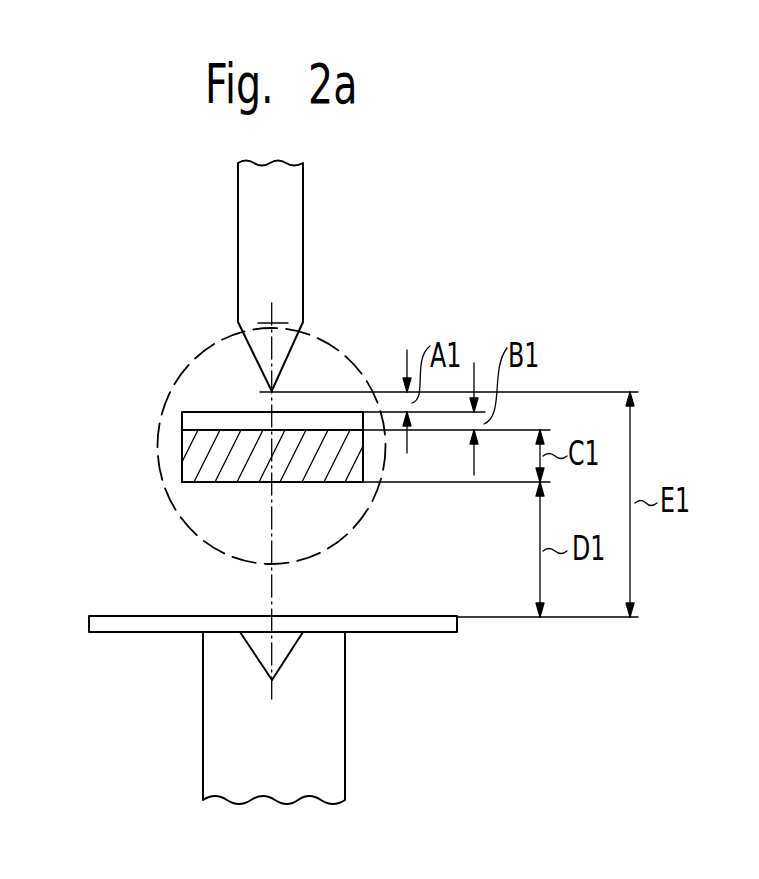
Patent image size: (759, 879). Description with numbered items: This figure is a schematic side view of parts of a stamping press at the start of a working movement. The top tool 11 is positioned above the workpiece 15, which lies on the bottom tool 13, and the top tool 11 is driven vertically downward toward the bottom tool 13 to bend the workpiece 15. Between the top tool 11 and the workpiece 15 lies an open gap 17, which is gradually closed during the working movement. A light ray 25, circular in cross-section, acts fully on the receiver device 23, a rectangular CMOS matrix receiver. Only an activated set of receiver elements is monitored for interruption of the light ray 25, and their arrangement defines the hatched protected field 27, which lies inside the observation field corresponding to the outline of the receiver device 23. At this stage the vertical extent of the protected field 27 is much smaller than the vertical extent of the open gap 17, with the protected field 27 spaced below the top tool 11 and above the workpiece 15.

The top tool 11 is at (245, 192).
The light ray 25 is at (211, 342).
The receiver device 23 is at (190, 417).
The protected field 27 is at (198, 449).
The open gap 17 is at (216, 568).
The workpiece 15 is at (137, 623).
The bottom tool 13 is at (217, 749).